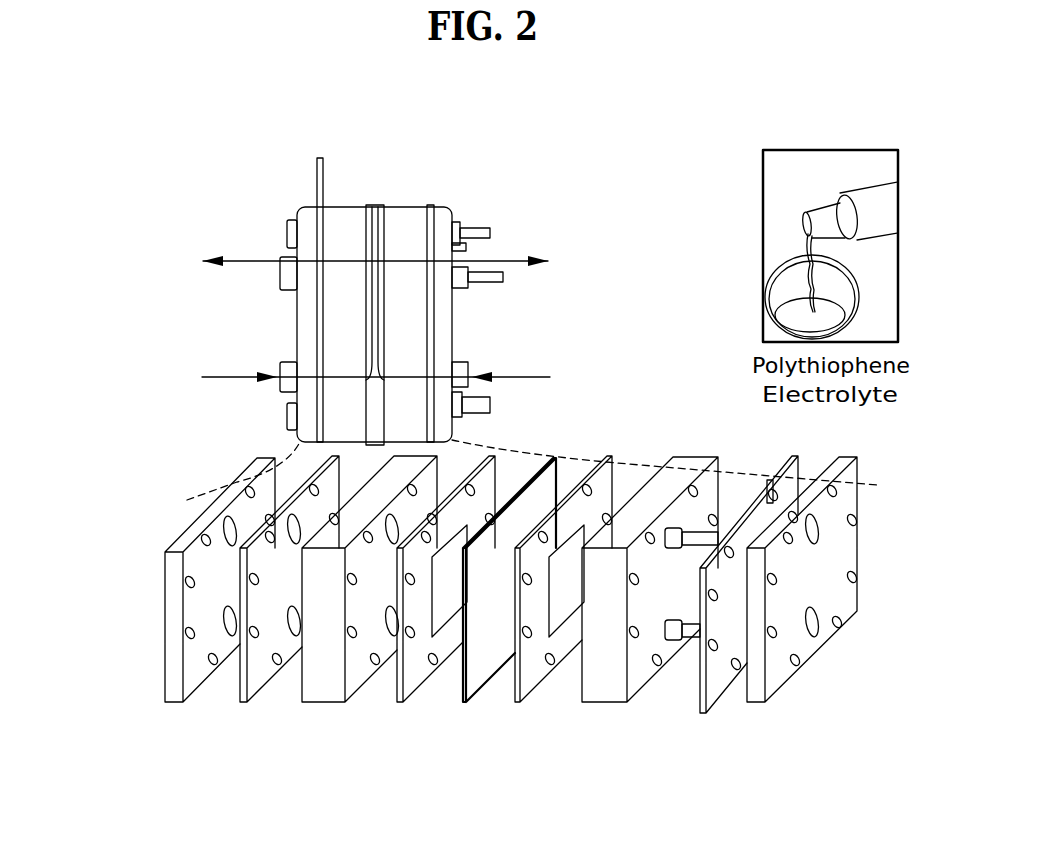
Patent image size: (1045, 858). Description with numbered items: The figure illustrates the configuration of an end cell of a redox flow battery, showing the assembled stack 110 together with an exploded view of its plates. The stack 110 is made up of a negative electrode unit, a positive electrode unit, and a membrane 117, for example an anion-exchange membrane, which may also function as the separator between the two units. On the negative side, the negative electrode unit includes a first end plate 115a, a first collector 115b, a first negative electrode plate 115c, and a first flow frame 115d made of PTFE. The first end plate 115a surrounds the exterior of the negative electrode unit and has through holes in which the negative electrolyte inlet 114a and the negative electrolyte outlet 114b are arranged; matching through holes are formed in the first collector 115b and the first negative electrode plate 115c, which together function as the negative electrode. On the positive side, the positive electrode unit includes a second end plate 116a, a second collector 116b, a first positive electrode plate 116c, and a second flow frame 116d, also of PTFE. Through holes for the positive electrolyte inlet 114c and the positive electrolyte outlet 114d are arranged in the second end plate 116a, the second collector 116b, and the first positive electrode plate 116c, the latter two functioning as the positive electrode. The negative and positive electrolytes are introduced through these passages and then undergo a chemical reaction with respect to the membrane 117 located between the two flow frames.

The stack 110 is at (395, 200).
The negative electrolyte inlet 114a is at (290, 383).
The negative electrolyte outlet 114b is at (280, 262).
The positive electrolyte inlet 114c is at (468, 383).
The positive electrolyte outlet 114d is at (503, 277).
The first end plate 115a is at (185, 702).
The first collector 115b is at (245, 702).
The first negative electrode plate 115c is at (322, 702).
The first flow frame 115d is at (400, 702).
The second end plate 116a is at (807, 660).
The second collector 116b is at (718, 700).
The first positive electrode plate 116c is at (602, 702).
The second flow frame 116d is at (545, 677).
The membrane 117 is at (480, 688).